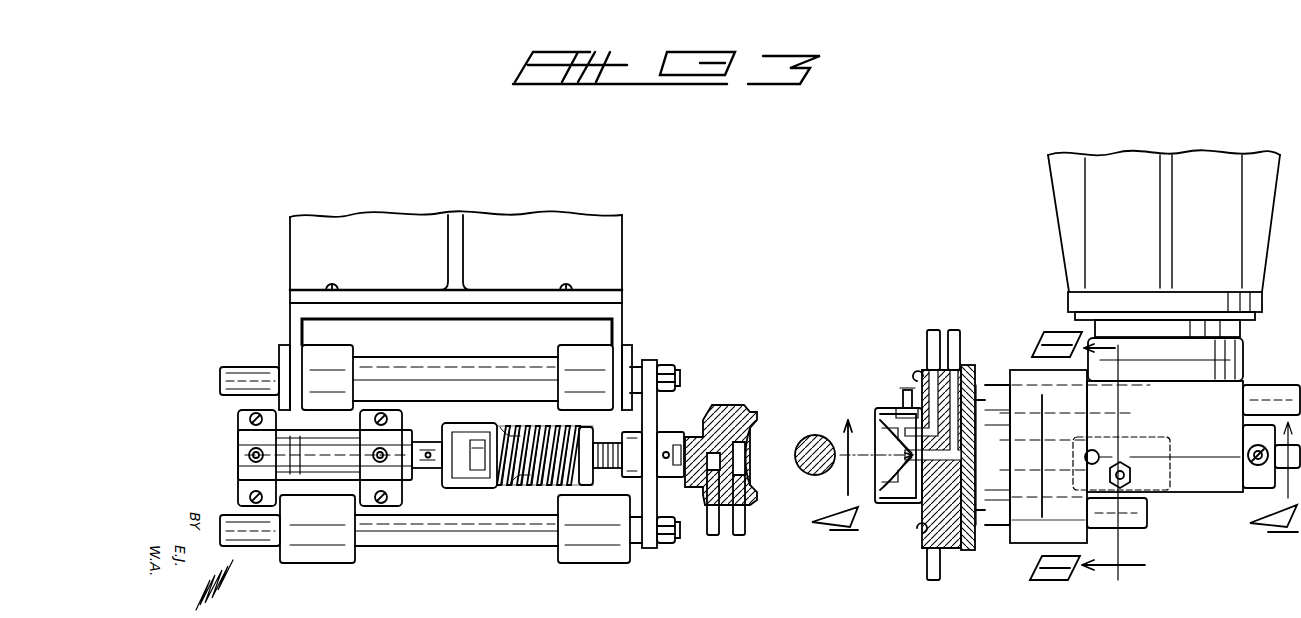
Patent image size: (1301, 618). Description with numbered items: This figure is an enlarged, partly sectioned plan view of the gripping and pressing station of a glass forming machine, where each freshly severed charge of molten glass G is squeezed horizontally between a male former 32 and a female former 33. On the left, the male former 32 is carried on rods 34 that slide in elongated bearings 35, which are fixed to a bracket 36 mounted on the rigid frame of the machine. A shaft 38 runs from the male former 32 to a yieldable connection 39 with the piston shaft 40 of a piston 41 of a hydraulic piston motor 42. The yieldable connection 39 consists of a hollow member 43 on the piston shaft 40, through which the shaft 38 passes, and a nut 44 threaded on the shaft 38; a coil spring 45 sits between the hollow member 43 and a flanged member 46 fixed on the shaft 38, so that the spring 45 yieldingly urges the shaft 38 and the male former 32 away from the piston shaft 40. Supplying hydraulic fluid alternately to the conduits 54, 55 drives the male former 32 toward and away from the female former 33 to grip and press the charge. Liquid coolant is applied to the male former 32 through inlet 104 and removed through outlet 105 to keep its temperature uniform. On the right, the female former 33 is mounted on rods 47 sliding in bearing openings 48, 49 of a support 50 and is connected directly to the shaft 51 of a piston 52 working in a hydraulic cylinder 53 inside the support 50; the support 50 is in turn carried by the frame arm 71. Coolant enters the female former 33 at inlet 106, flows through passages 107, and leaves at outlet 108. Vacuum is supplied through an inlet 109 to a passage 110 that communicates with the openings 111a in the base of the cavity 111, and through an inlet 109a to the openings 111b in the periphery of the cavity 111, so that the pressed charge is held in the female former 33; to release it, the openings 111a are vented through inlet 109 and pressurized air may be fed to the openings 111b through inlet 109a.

The male former 32 is at (726, 408).
The female former 33 is at (905, 422).
The rods 34 is at (257, 378).
The elongated bearings 35 is at (478, 342).
The bracket 36 is at (612, 237).
The shaft 38 is at (612, 468).
The yieldable connection 39 is at (511, 421).
The piston shaft 40 is at (423, 470).
The piston 41 is at (240, 463).
The hydraulic piston motor 42 is at (250, 474).
The hollow member 43 is at (465, 485).
The nut 44 is at (488, 480).
The coil spring 45 is at (555, 472).
The flanged member 46 is at (600, 443).
The rods 47 is at (1258, 385).
The bearing opening 48 is at (1038, 390).
The bearing opening 49 is at (1020, 520).
The support 50 is at (1240, 370).
The shaft 51 is at (968, 500).
The piston 52 is at (1195, 492).
The hydraulic cylinder 53 is at (1212, 492).
The conduit 54 is at (254, 453).
The conduit 55 is at (384, 450).
The frame arm 71 is at (1100, 199).
The inlet 104 is at (740, 535).
The outlet 105 is at (712, 535).
The inlet 106 is at (932, 335).
The passages 107 is at (905, 478).
The outlet 108 is at (928, 565).
The vacuum inlet 109 is at (955, 335).
The inlet 109a is at (907, 388).
The passage 110 is at (945, 468).
The cavity 111 is at (895, 445).
The openings 111a is at (905, 456).
The openings 111b is at (900, 440).
The molten glass G is at (815, 435).